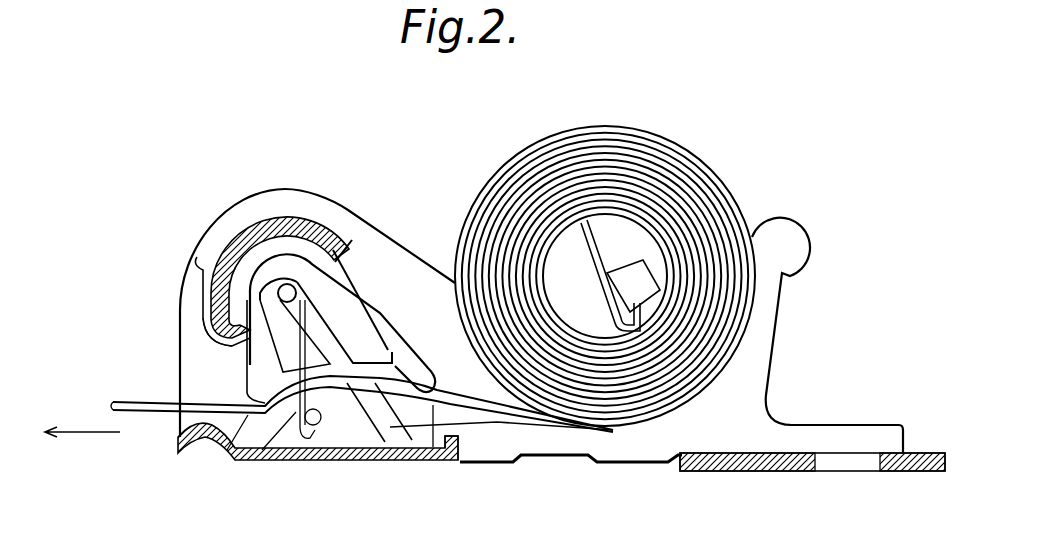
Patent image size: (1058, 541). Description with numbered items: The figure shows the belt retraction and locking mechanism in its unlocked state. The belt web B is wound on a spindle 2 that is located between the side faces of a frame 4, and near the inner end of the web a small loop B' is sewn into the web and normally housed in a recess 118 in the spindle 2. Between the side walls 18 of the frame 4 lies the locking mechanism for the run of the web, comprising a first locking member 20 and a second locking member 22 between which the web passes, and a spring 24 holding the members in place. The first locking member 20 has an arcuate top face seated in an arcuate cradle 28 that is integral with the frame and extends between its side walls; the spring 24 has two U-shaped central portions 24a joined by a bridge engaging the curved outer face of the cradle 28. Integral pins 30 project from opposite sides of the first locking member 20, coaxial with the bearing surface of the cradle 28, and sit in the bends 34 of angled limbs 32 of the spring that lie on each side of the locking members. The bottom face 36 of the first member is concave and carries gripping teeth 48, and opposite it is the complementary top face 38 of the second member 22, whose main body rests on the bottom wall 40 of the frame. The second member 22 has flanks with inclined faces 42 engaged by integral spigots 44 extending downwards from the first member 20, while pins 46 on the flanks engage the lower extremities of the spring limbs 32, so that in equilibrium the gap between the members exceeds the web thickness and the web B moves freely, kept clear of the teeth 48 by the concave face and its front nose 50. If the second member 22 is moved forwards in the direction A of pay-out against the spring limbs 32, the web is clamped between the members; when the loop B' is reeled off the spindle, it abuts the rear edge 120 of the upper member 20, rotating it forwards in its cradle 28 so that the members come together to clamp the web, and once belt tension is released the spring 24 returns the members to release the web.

The spindle 2 is at (563, 253).
The frame 4 is at (714, 472).
The side walls 18 is at (216, 228).
The first locking member 20 is at (318, 250).
The second locking member 22 is at (343, 438).
The spring 24 is at (197, 257).
The U-shaped central portions 24a is at (203, 297).
The arcuate cradle 28 is at (253, 237).
The pins 30 is at (281, 265).
The angled limbs 32 is at (227, 457).
The bends 34 is at (292, 270).
The bottom face 36 is at (383, 375).
The top face 38 is at (468, 462).
The bottom wall 40 is at (378, 440).
The inclined faces 42 is at (318, 452).
The spigots 44 is at (415, 450).
The pins 46 is at (247, 460).
The gripping teeth 48 is at (437, 405).
The front nose 50 is at (257, 395).
The recess 118 is at (626, 272).
The rear edge 120 is at (420, 372).
The belt web B is at (409, 394).
The small loop B' is at (670, 192).
The direction of pay-out A is at (82, 447).